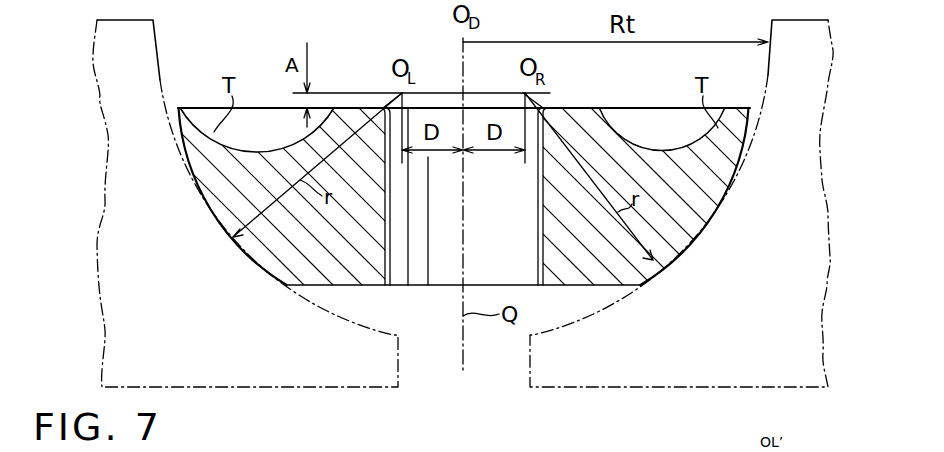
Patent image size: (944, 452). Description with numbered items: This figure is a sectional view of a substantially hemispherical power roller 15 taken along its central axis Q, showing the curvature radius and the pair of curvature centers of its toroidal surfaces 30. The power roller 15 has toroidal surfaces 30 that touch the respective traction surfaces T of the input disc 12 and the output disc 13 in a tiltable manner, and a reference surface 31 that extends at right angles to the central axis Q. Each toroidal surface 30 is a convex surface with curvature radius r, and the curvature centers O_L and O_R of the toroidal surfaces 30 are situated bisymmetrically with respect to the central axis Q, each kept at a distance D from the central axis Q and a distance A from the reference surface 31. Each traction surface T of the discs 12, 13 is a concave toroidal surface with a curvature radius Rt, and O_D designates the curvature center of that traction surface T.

The input disc 12 is at (138, 38).
The output disc 13 is at (805, 77).
The power roller 15 is at (697, 227).
The toroidal surface 30 is at (750, 127).
The reference surface 31 is at (357, 104).